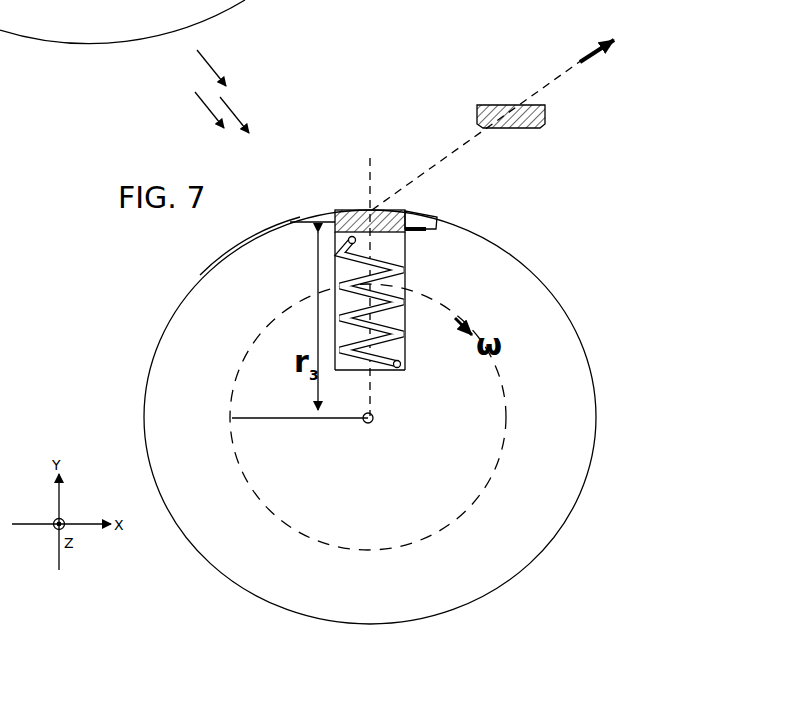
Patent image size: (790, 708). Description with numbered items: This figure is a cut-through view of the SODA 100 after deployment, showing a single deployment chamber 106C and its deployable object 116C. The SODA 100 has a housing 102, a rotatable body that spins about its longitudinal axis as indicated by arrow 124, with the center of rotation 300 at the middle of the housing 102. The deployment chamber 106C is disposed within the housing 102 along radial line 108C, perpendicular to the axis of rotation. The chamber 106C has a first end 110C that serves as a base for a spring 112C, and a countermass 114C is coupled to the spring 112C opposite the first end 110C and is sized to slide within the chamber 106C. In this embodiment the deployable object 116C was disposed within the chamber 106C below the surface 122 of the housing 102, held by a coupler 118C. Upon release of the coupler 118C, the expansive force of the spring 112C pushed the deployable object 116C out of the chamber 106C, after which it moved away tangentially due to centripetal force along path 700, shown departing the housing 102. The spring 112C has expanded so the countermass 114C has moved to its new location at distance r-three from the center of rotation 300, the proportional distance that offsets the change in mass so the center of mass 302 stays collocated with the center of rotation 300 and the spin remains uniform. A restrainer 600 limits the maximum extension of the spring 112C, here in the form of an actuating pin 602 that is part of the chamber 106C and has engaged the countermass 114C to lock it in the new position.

The SODA 100 is at (552, 247).
The housing 102 is at (585, 328).
The surface 122 is at (210, 273).
The arrow 124 is at (504, 456).
The radial line 108C is at (370, 277).
The path 700 is at (505, 115).
The deployable object 116C is at (500, 110).
The countermass 114C is at (345, 210).
The coupler 118C is at (420, 211).
The actuating pin 602 is at (424, 233).
The restrainer 600 is at (432, 228).
The deployment chamber 106C is at (410, 288).
The spring 112C is at (401, 360).
The first end 110C is at (397, 372).
The center of rotation 300 is at (373, 420).
The center of mass 302 is at (365, 424).